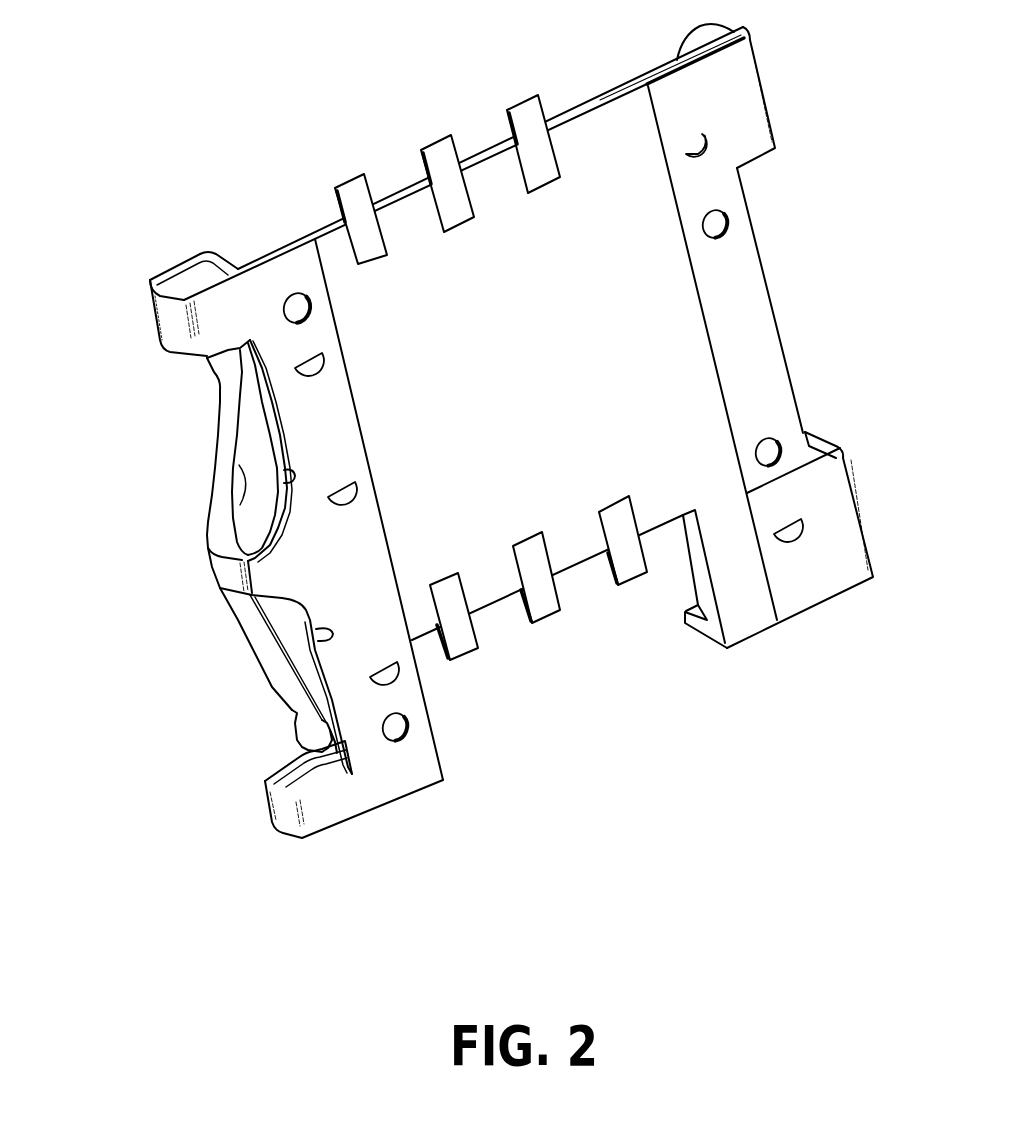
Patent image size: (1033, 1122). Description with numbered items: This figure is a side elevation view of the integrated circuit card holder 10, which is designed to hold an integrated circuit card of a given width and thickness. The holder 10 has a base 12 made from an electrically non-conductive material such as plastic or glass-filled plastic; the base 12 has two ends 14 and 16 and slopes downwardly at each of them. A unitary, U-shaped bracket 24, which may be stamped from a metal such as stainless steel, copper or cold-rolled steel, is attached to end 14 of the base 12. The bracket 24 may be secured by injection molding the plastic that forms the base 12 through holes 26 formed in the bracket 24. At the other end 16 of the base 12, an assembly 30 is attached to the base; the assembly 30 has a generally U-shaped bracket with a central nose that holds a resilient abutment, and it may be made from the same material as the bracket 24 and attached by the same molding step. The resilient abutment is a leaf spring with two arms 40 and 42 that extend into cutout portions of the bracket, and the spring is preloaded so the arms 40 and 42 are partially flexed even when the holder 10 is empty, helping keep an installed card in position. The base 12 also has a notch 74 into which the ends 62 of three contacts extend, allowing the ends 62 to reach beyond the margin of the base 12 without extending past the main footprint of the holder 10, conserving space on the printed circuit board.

The integrated circuit card holder 10 is at (197, 133).
The base 12 is at (537, 404).
The end 14 is at (883, 264).
The end 16 is at (134, 617).
The U-shaped bracket 24 is at (764, 354).
The holes 26 is at (684, 143).
The assembly 30 is at (358, 574).
The arm 40 is at (263, 657).
The arm 42 is at (220, 474).
The ends of contacts 62 is at (520, 110).
The notch 74 is at (658, 752).